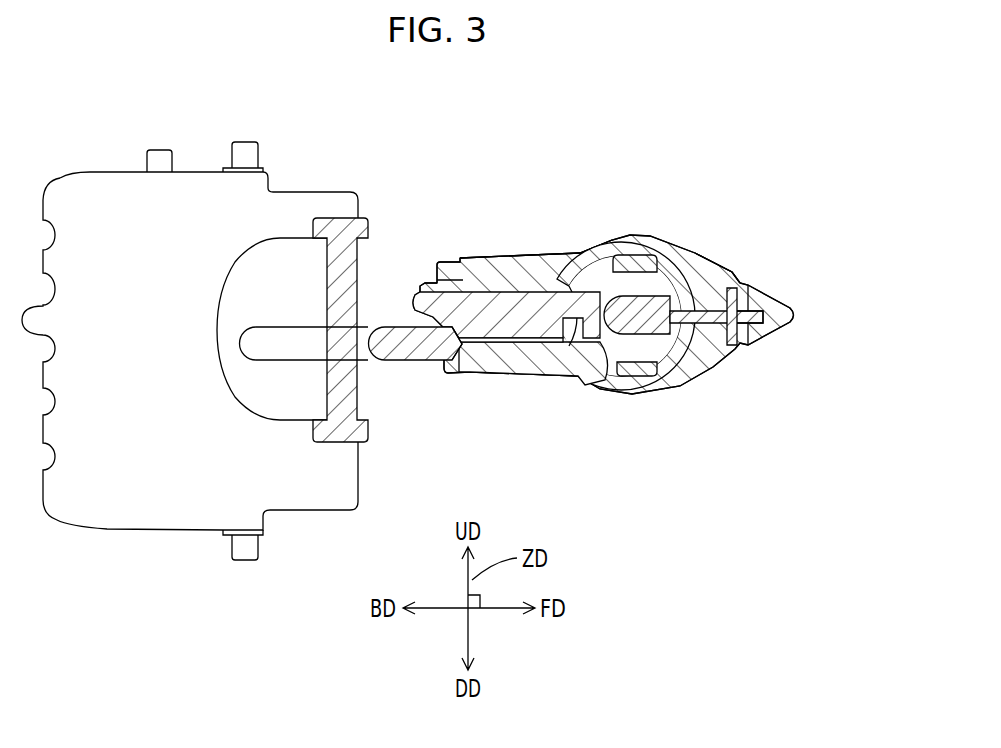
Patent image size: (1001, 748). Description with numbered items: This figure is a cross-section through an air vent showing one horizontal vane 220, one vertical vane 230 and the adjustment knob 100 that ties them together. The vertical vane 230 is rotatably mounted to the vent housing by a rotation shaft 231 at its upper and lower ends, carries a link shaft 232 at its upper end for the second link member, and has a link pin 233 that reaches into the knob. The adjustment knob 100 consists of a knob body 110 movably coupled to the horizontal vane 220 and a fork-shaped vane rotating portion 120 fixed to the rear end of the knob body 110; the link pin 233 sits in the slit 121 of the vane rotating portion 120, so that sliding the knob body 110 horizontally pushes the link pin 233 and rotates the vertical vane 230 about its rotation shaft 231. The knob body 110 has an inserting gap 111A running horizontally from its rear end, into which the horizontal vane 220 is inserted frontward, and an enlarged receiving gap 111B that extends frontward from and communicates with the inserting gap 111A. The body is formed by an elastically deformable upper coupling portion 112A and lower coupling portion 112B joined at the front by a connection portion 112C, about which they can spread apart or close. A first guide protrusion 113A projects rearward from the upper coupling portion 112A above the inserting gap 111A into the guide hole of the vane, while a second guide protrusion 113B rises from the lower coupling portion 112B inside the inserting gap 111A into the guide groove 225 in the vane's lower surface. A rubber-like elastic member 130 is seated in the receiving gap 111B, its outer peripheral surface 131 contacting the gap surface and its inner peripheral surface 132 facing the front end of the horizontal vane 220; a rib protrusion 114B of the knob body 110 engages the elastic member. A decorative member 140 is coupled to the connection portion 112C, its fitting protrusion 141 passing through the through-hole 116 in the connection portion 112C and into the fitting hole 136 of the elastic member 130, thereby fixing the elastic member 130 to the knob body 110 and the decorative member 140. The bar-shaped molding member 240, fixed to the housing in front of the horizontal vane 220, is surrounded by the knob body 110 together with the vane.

The adjustment knob 100 is at (692, 130).
The knob body 110 is at (629, 209).
The inserting gap 111A is at (512, 292).
The receiving gap 111B is at (611, 267).
The upper coupling portion 112A is at (537, 272).
The lower coupling portion 112B is at (513, 373).
The connection portion 112C is at (714, 273).
The first guide protrusion 113A is at (452, 262).
The second guide protrusion 113B is at (597, 368).
The rib protrusion 114B is at (678, 290).
The through-hole 116 is at (748, 345).
The vane rotating portion 120 is at (393, 343).
The slit 121 is at (285, 320).
The elastic member 130 is at (683, 380).
The outer peripheral surface 131 is at (680, 266).
The inner peripheral surface 132 is at (652, 256).
The fitting hole 136 is at (738, 352).
The decorative member 140 is at (778, 300).
The fitting protrusion 141 is at (762, 333).
The horizontal vane 220 is at (468, 373).
The guide groove 225 is at (577, 372).
The vertical vane 230 is at (95, 192).
The rotation shaft 231 is at (243, 150).
The link shaft 232 is at (157, 157).
The link pin 233 is at (350, 368).
The molding member 240 is at (648, 390).